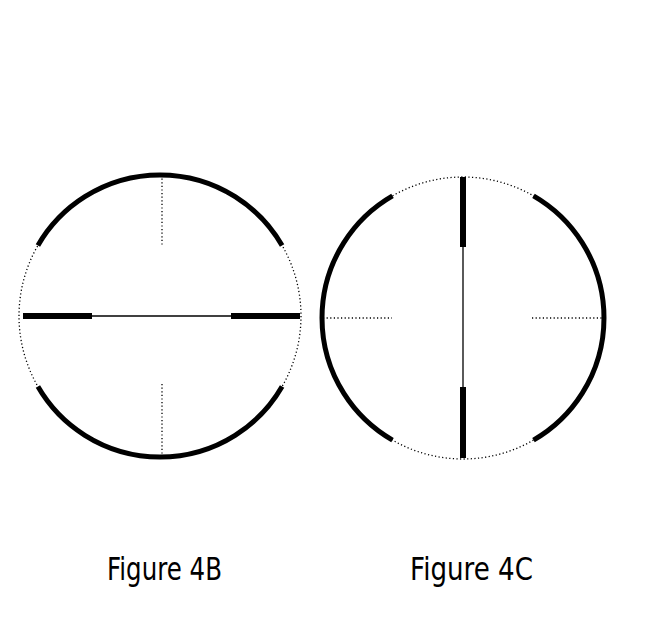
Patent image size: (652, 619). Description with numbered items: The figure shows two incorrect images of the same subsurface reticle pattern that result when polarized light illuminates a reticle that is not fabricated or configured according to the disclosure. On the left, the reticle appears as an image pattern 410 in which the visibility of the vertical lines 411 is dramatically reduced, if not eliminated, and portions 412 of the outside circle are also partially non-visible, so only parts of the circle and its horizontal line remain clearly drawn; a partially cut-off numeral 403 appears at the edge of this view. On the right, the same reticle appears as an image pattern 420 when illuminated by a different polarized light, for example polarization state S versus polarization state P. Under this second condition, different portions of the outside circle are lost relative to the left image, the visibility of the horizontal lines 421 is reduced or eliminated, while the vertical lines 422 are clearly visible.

In FIG. 4B, the lens element 403 is at (141, 427).
In FIG. 4B, the image pattern 410 is at (85, 142).
In FIG. 4B, the vertical lines 411 is at (162, 232).
In FIG. 4B, the portions of the outside circle 412 is at (284, 257).
In FIG. 4C, the image pattern 420 is at (562, 145).
In FIG. 4C, the horizontal lines 421 is at (373, 318).
In FIG. 4C, the vertical lines 422 is at (465, 430).